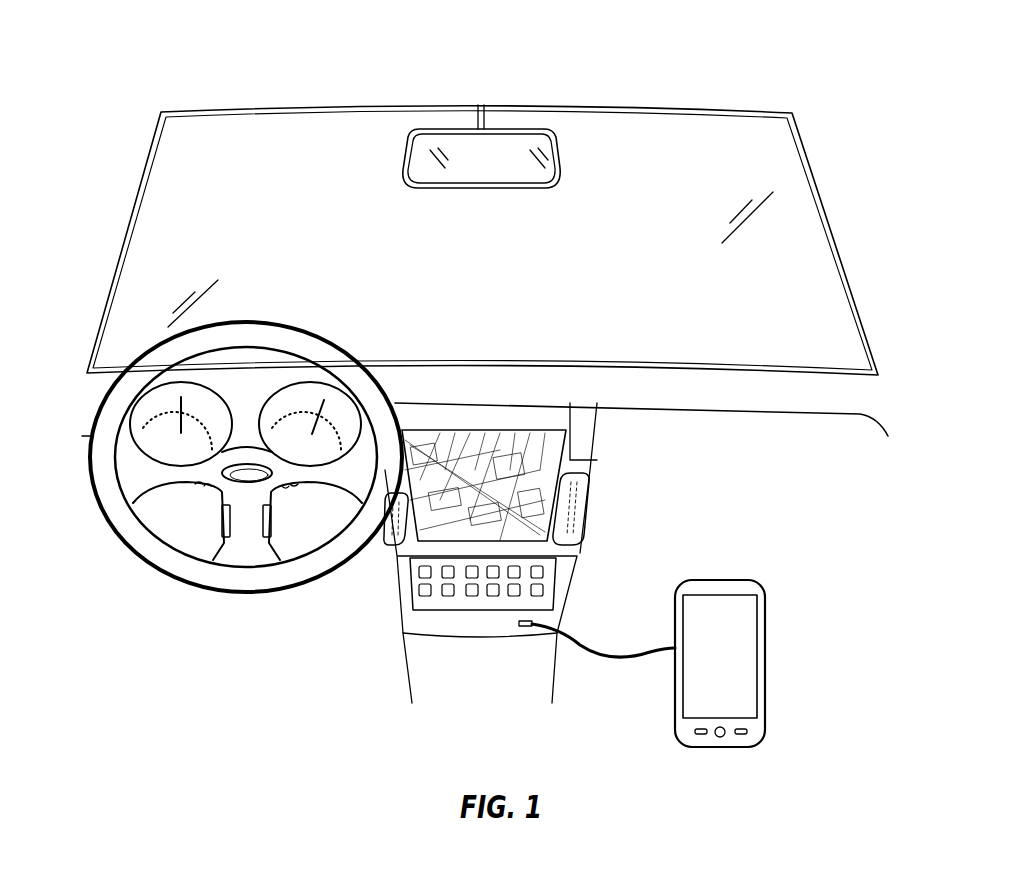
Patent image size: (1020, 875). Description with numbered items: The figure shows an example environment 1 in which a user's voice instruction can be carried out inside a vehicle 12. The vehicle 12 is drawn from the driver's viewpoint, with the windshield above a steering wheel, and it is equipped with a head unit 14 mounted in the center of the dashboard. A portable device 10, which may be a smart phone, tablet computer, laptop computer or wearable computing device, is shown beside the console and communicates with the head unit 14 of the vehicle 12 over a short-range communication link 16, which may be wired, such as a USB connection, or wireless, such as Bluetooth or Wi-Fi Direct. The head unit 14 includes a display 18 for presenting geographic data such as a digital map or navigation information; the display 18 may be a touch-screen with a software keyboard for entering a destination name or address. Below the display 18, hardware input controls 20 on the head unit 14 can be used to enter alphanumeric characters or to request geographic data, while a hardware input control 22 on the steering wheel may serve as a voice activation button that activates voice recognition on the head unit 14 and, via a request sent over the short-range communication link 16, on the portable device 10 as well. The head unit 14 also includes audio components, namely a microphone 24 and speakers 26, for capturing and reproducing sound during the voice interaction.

The environment 1 is at (250, 60).
The portable device 10 is at (722, 580).
The vehicle 12 is at (70, 338).
The head unit 14 is at (522, 396).
The short-range communication link 16 is at (590, 640).
The display 18 is at (553, 447).
The hardware input controls 20 is at (408, 574).
The hardware input control 22 is at (218, 528).
The microphone 24 is at (395, 528).
The speakers 26 is at (580, 507).